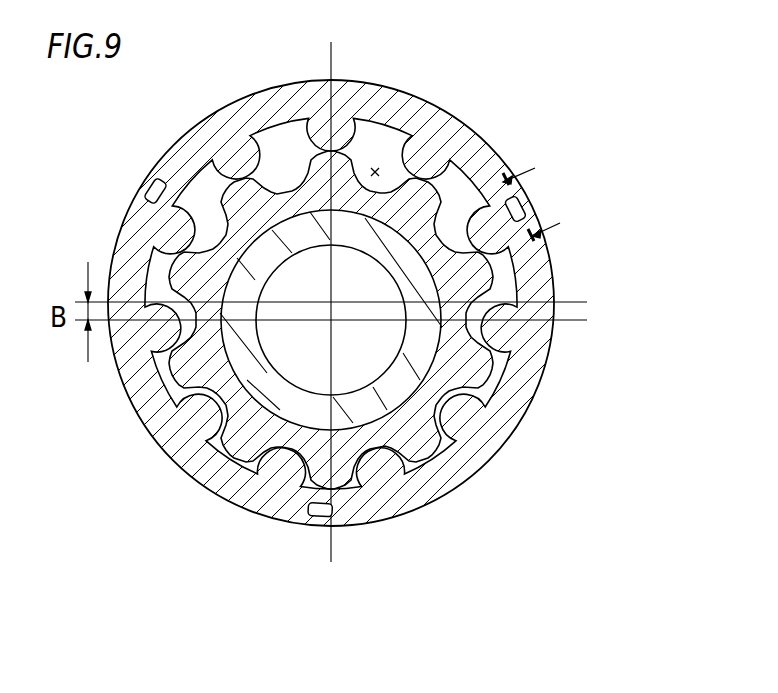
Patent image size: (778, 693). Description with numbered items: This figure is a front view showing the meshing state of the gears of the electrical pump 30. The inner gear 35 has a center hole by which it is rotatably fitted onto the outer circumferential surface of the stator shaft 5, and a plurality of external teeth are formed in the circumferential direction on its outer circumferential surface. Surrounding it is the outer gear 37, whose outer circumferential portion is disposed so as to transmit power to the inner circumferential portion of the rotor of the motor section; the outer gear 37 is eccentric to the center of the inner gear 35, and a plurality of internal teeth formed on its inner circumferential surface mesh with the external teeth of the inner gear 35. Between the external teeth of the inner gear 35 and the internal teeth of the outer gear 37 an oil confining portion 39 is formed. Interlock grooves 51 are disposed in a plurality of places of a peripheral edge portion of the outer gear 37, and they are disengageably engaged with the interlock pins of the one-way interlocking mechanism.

The electrical pump 30 is at (365, 304).
The outer gear 37 is at (472, 108).
The inner gear 35 is at (472, 368).
The stator shaft 5 is at (361, 320).
The interlock grooves 51 is at (307, 520).
The oil confining portion 39 is at (378, 168).